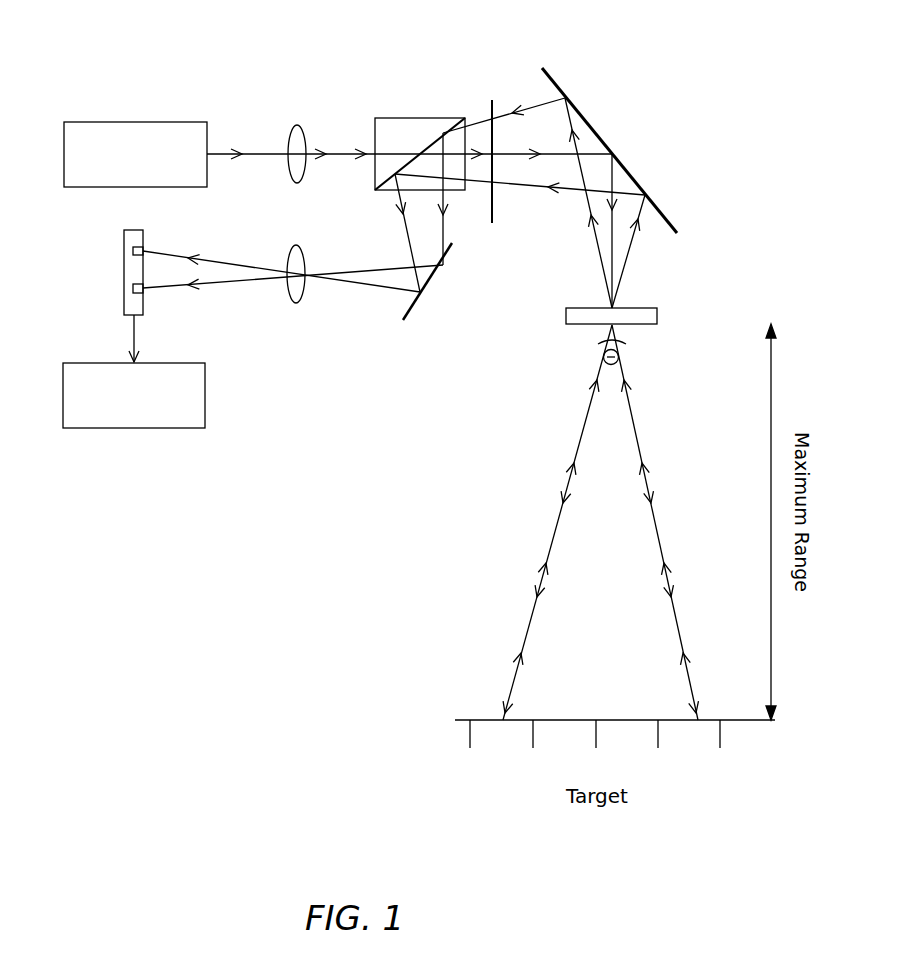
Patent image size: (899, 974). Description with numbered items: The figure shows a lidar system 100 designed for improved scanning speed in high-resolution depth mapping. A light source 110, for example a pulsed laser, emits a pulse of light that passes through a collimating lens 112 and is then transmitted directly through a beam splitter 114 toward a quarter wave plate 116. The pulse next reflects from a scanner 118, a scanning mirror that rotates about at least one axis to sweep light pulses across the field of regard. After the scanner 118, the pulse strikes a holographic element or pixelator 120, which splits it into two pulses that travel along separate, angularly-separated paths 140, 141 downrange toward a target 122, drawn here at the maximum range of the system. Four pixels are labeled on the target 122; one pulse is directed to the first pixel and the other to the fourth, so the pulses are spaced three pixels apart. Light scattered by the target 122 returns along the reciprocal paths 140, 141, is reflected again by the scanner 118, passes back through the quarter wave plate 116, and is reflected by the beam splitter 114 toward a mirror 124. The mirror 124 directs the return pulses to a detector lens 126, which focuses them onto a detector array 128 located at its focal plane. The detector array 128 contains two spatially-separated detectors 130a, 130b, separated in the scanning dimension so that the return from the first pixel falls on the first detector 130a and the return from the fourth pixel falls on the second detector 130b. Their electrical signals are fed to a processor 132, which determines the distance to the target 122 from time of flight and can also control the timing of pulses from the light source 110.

The lidar system 100 is at (251, 517).
The light source 110 is at (135, 138).
The collimating lens 112 is at (297, 142).
The beam splitter 114 is at (420, 142).
The quarter wave plate 116 is at (492, 148).
The scanner 118 is at (599, 138).
The holographic element or pixelator 120 is at (637, 318).
The target 122 is at (589, 736).
The mirror 124 is at (429, 285).
The detector lens 126 is at (296, 290).
The detector array 128 is at (124, 258).
The first detector 130a is at (133, 250).
The second detector 130b is at (124, 288).
The processor 132 is at (134, 415).
The angularly-separated path 140 is at (563, 482).
The angularly-separated path 141 is at (652, 485).